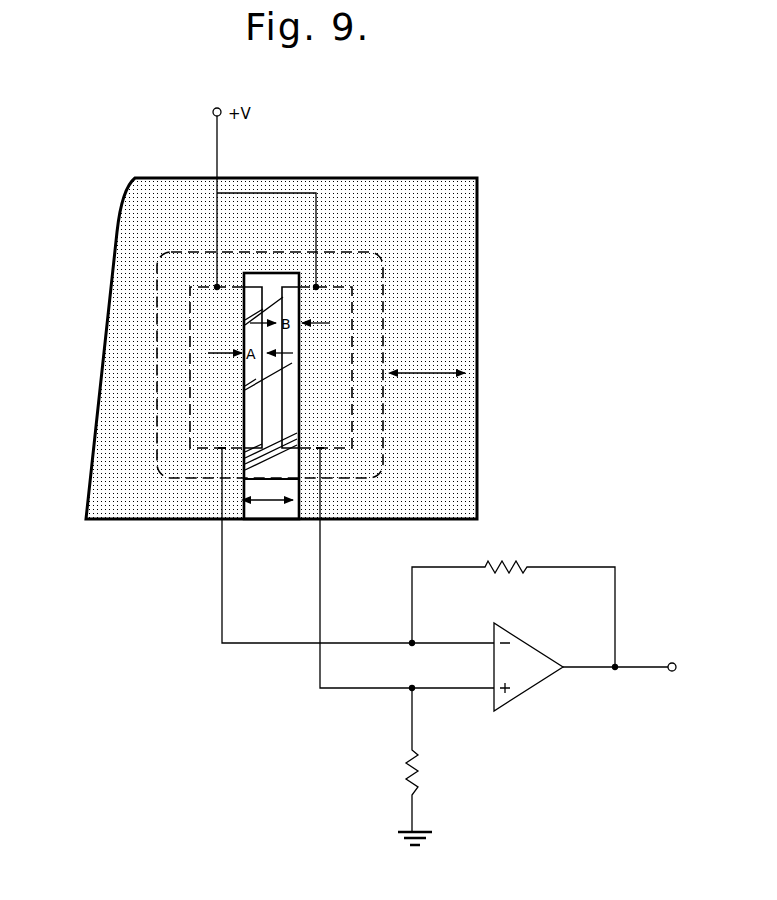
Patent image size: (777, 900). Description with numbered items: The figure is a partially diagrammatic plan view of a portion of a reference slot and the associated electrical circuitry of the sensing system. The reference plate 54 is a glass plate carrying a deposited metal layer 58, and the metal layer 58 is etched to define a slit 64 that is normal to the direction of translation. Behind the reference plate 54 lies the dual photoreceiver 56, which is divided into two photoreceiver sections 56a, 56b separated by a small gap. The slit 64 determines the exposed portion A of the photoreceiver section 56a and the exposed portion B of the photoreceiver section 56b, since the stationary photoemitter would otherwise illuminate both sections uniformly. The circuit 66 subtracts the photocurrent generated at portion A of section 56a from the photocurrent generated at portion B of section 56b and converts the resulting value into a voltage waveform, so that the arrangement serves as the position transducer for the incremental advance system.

The reference plate 54 is at (477, 208).
The photoreceiver 56 is at (157, 392).
The photoreceiver section 56a is at (190, 312).
The photoreceiver section 56b is at (345, 287).
The metal layer 58 is at (450, 435).
The slit 64 is at (266, 502).
The circuit 66 is at (571, 560).